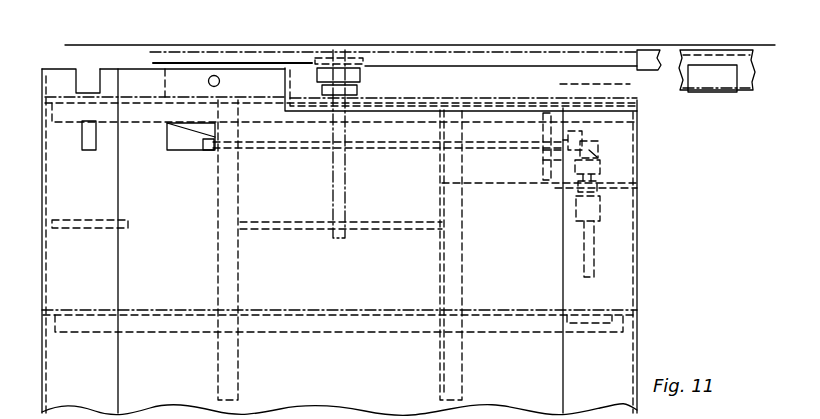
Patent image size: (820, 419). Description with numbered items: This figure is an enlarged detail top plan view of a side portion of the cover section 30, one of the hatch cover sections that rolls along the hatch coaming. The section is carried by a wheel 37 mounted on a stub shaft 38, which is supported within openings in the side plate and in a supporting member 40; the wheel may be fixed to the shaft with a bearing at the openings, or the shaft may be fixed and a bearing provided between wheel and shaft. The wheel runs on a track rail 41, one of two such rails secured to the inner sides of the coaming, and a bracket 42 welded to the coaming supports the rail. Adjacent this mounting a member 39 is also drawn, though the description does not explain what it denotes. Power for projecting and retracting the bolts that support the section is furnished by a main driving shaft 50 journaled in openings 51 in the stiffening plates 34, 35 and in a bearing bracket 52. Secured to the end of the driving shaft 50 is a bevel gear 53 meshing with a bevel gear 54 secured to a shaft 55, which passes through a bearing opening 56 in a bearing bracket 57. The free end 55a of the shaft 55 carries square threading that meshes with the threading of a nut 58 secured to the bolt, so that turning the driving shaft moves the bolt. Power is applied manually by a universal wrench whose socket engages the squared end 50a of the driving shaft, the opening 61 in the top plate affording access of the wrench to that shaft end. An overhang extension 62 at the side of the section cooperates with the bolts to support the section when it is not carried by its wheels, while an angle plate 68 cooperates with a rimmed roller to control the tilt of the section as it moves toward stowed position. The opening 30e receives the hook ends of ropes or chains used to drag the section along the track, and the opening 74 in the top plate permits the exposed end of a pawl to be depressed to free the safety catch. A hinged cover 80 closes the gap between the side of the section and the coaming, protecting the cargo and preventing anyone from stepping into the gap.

The cover section 30 is at (339, 242).
The opening 30e is at (214, 75).
The stiffening plate 34 is at (240, 276).
The stiffening plate 35 is at (440, 255).
The wheel 37 is at (350, 75).
The stub shaft 38 is at (336, 193).
The bracket 39 is at (270, 100).
The supporting member 40 is at (300, 230).
The track rail 41 is at (712, 80).
The bracket 42 is at (743, 67).
The main driving shaft 50 is at (287, 143).
The squared end 50a is at (208, 148).
The opening 51 is at (236, 148).
The bearing bracket 52 is at (543, 162).
The bevel gear 53 is at (578, 138).
The bevel gear 54 is at (594, 150).
The shaft 55 is at (596, 187).
The free end 55a is at (594, 248).
The bearing opening 56 is at (596, 190).
The bearing bracket 57 is at (518, 184).
The nut 58 is at (596, 210).
The opening 61 is at (177, 140).
The overhang extension 62 is at (62, 78).
The angle plate 68 is at (492, 65).
The opening 74 is at (88, 136).
The hinged cover 80 is at (598, 83).